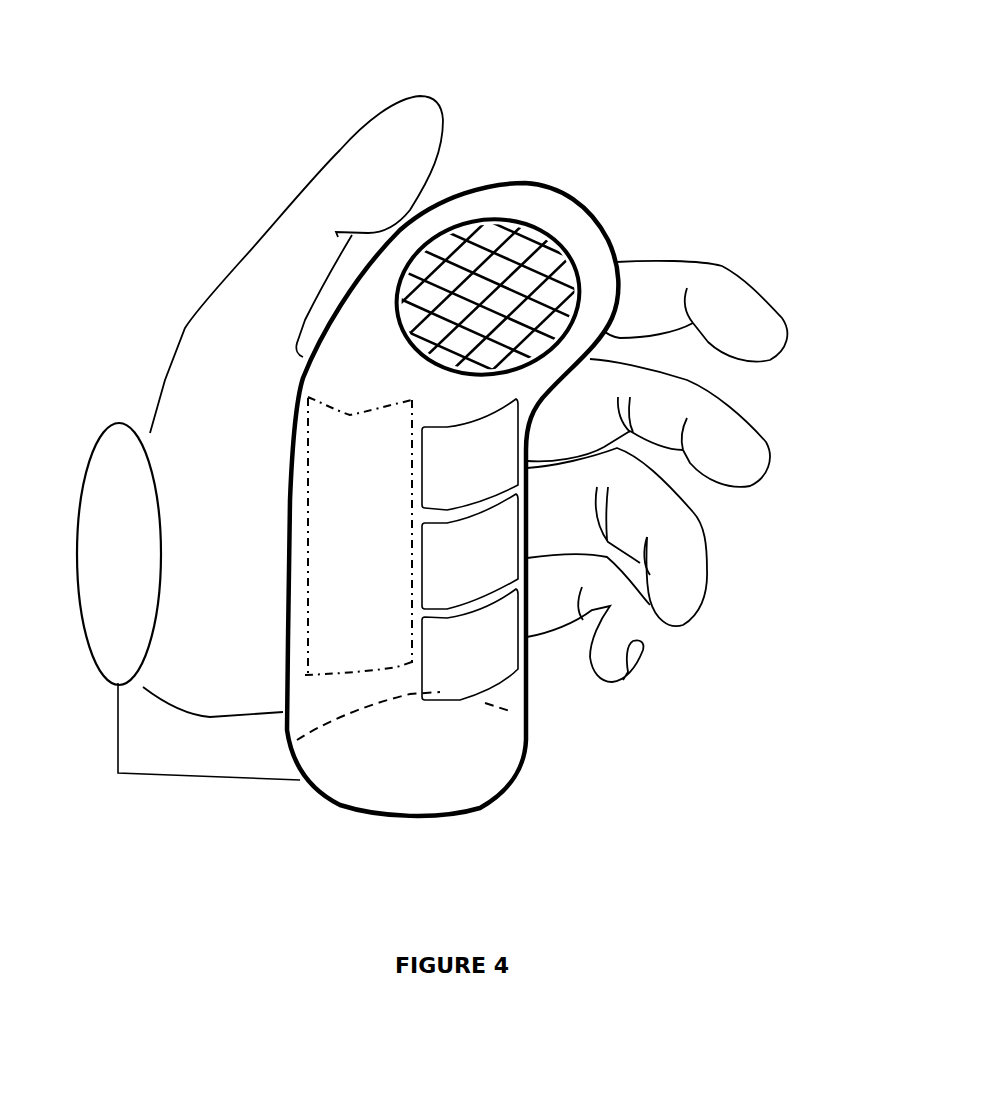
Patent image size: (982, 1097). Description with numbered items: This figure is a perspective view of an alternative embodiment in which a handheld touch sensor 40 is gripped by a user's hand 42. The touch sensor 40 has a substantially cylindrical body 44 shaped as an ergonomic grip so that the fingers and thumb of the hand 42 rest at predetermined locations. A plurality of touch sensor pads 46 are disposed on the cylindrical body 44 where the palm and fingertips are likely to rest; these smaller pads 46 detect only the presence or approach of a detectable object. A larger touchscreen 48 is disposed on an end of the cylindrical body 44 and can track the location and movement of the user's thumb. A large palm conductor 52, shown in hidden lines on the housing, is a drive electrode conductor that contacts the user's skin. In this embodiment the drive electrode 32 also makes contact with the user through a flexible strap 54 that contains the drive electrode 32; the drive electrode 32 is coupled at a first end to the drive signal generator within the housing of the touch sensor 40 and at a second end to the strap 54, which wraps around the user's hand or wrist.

The drive electrode 32 is at (250, 783).
The touch sensor 40 is at (506, 434).
The user's hand 42 is at (447, 127).
The cylindrical body 44 is at (286, 558).
The touch sensor pads 46 is at (492, 640).
The touchscreen 48 is at (538, 307).
The palm conductor 52 is at (347, 492).
The flexible strap 54 is at (118, 420).